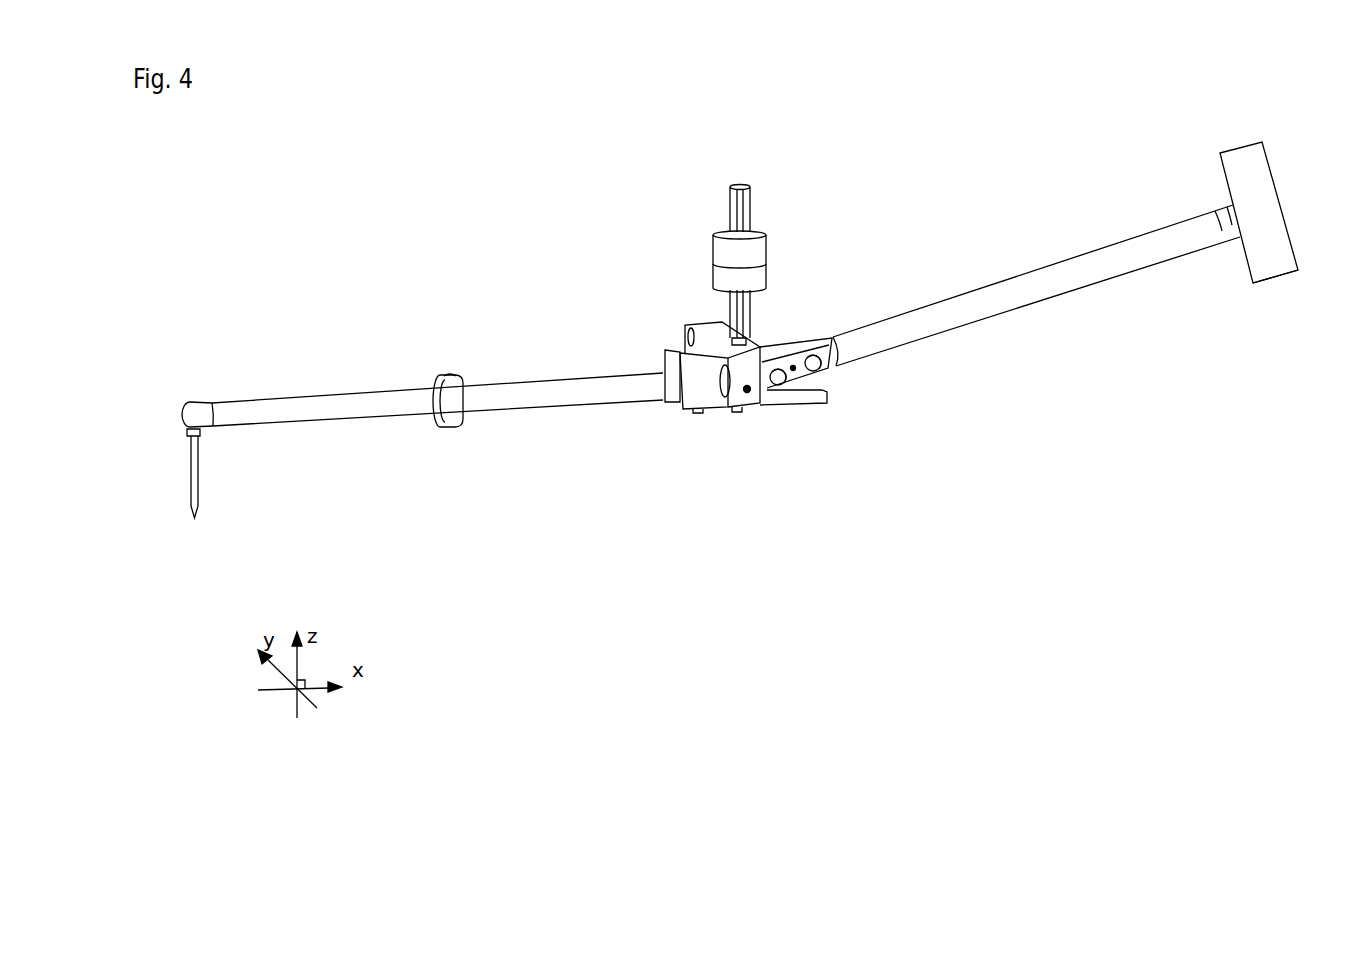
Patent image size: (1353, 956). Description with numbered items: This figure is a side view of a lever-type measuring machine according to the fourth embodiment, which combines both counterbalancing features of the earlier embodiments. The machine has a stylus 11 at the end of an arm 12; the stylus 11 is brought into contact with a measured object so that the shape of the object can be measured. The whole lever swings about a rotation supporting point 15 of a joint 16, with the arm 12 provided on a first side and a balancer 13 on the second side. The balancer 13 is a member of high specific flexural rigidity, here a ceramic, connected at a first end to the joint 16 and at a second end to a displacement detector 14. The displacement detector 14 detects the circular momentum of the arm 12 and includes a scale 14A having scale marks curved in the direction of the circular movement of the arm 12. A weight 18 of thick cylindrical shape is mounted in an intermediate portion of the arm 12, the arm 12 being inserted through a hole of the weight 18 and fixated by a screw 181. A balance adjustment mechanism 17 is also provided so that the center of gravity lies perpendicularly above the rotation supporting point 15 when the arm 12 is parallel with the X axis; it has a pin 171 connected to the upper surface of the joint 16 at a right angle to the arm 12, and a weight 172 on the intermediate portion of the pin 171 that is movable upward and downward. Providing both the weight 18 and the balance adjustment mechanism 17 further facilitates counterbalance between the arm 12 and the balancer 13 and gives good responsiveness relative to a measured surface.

The stylus 11 is at (200, 485).
The arm 12 is at (350, 392).
The balancer 13 is at (1075, 287).
The displacement detector 14 is at (1275, 148).
The scale 14A is at (1290, 273).
The rotation supporting point 15 is at (747, 389).
The joint 16 is at (825, 420).
The balance adjustment mechanism 17 is at (813, 254).
The pin 171 is at (753, 212).
The weight 172 is at (765, 278).
The weight 18 is at (465, 381).
The screw 181 is at (448, 373).